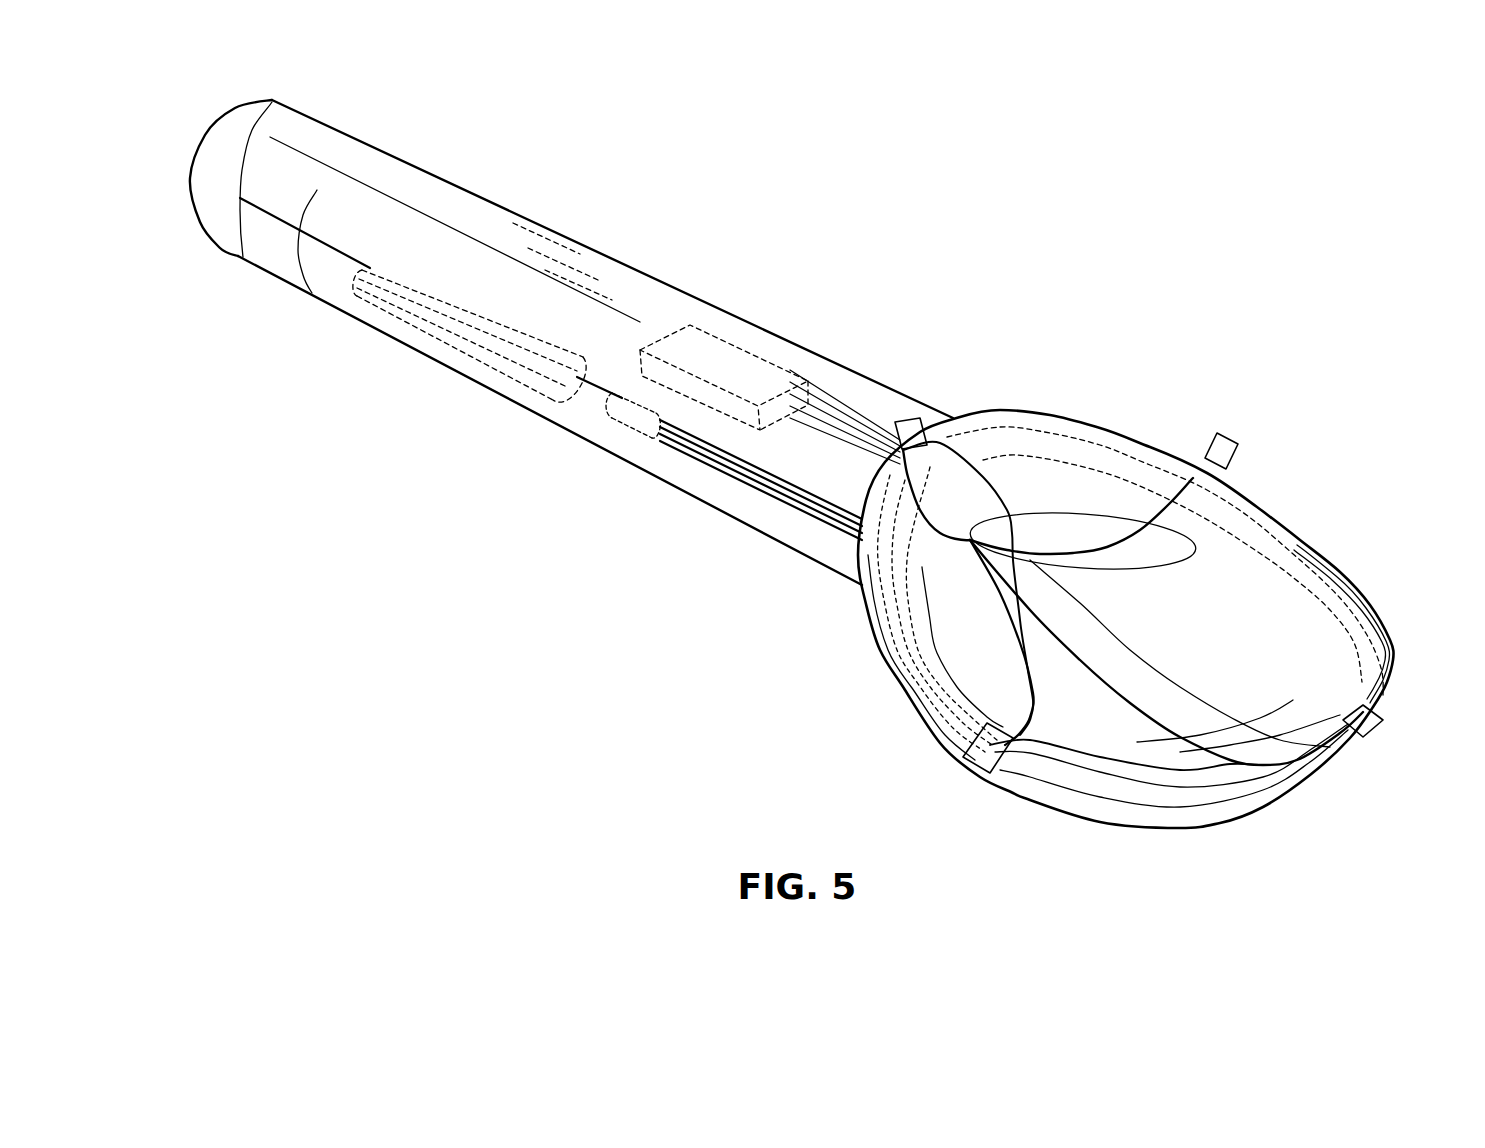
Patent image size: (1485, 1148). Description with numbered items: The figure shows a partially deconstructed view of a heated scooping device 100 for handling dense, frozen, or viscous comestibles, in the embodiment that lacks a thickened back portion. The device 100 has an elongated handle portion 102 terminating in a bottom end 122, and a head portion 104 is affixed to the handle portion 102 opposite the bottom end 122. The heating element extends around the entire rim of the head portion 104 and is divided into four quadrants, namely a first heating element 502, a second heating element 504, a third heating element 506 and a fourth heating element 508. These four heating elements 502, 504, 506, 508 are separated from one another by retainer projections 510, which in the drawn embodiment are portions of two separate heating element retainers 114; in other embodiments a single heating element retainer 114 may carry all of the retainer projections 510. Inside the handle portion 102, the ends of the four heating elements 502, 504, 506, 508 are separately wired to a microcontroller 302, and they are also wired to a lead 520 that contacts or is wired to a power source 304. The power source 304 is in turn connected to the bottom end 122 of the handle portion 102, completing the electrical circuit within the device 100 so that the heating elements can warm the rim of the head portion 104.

The heated scooping device 100 is at (1244, 211).
The handle portion 102 is at (498, 203).
The bottom end 122 is at (222, 200).
The power source 304 is at (453, 325).
The microcontroller 302 is at (728, 355).
The lead 520 is at (635, 422).
The first heating element 502 is at (1357, 592).
The fourth heating element 508 is at (1068, 433).
The third heating element 506 is at (932, 667).
The head portion 104 is at (1090, 817).
The heating element retainer 114 is at (1178, 792).
The second heating element 504 is at (1227, 773).
The retainer projections 510 is at (912, 420).